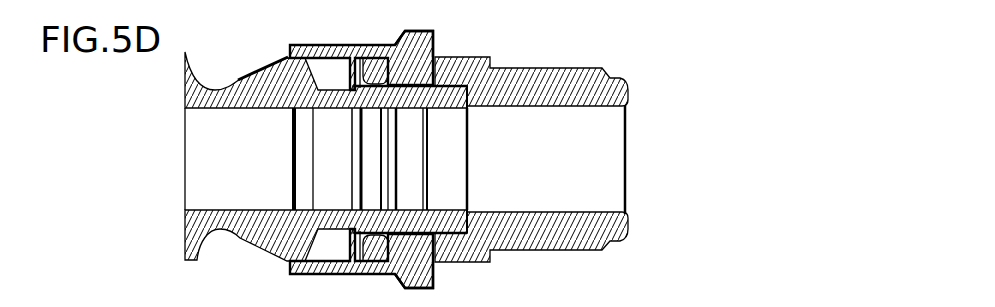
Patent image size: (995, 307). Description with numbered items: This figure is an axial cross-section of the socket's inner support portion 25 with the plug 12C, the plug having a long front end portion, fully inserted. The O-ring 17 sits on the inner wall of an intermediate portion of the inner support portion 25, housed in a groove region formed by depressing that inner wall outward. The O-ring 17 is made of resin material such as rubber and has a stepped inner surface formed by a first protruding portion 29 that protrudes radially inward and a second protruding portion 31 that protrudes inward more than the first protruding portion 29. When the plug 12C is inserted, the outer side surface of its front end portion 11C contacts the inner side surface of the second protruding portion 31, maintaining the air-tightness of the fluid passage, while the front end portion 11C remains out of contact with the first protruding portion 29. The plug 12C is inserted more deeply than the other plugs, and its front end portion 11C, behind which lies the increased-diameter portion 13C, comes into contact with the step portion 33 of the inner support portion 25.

The front end portion 11C is at (340, 88).
The plug 12C is at (231, 86).
The increased-diameter portion 13C is at (273, 86).
The O-ring 17 is at (440, 5).
The inner support portion 25 is at (588, 67).
The first protruding portion 29 is at (385, 62).
The second protruding portion 31 is at (400, 42).
The step portion 33 is at (470, 100).